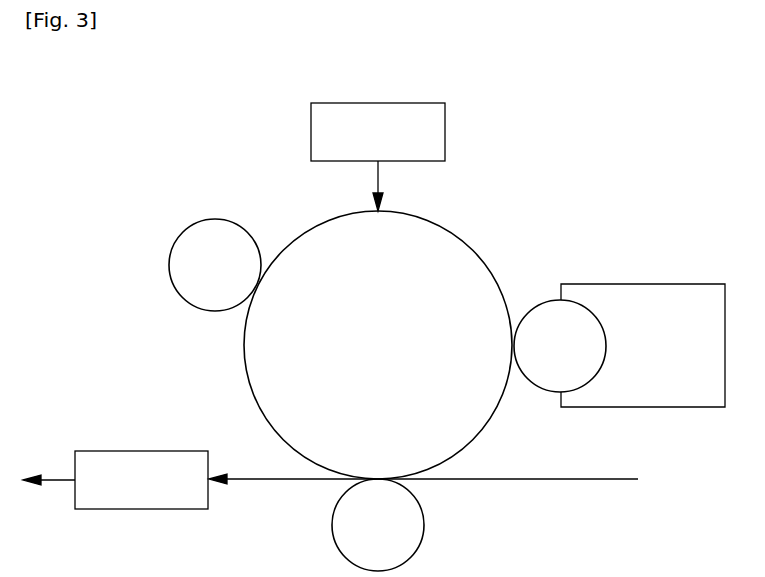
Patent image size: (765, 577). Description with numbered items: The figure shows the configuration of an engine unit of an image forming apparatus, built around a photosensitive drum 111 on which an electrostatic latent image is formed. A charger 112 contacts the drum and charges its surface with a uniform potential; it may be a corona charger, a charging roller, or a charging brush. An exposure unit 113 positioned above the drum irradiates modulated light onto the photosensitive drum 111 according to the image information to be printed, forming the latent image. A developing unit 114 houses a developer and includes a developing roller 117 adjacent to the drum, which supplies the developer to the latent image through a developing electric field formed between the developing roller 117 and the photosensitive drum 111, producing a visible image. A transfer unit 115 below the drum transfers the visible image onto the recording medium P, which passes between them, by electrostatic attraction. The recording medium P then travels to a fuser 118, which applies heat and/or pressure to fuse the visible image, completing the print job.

The photosensitive drum 111 is at (445, 226).
The charger 112 is at (215, 219).
The exposure unit 113 is at (376, 103).
The developing unit 114 is at (640, 284).
The transfer unit 115 is at (424, 521).
The developing roller 117 is at (530, 306).
The fuser 118 is at (141, 451).
The recording medium P is at (253, 484).